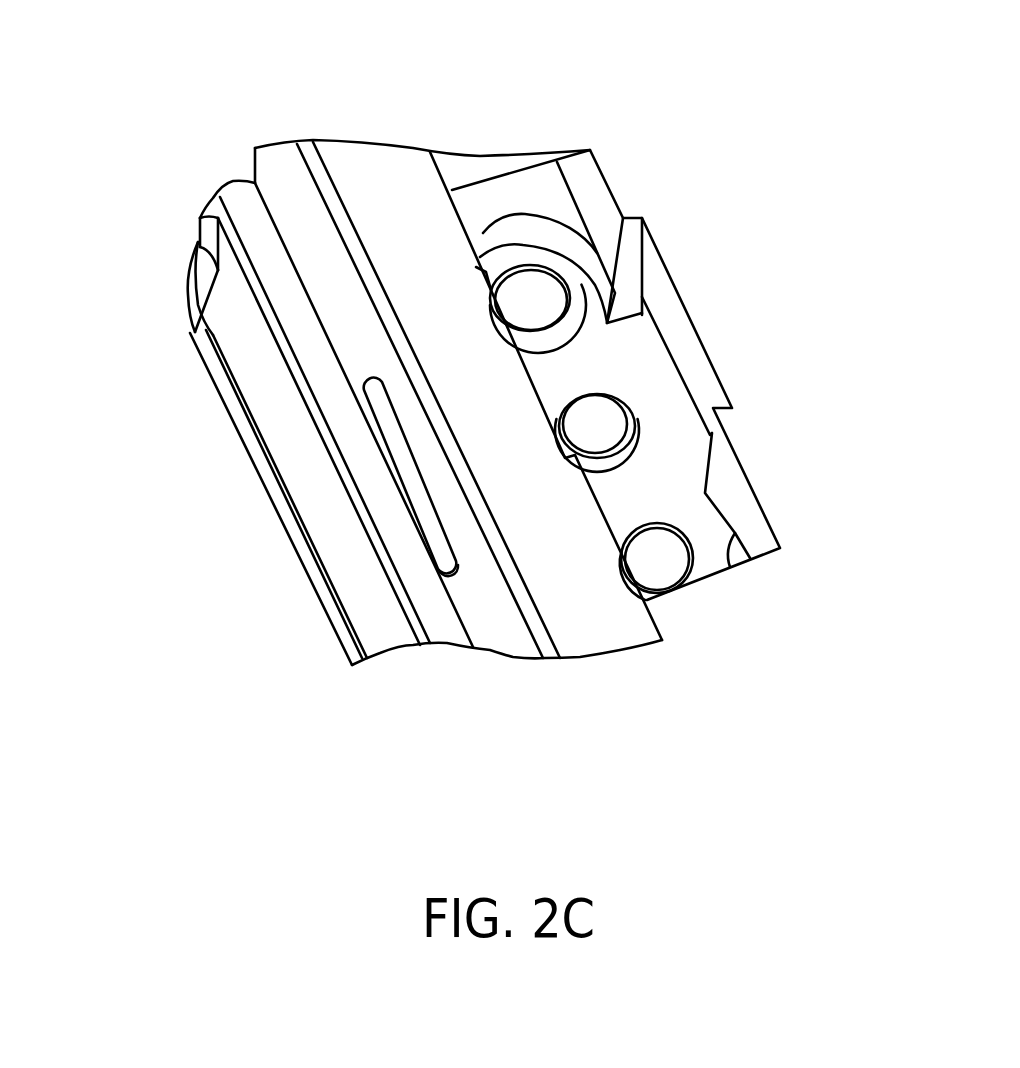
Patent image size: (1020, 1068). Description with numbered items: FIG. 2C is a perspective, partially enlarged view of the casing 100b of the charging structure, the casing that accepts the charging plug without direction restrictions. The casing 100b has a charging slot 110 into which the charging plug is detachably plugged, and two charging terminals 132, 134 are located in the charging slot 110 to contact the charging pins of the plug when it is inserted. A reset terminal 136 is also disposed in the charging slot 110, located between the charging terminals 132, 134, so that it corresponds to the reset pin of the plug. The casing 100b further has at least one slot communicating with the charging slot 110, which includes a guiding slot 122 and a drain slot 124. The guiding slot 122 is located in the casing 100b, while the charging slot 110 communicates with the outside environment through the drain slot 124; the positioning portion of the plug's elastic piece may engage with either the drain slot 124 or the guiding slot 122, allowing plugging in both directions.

The casing 100b is at (847, 866).
The charging slot 110 is at (477, 158).
The guiding slot 122 is at (646, 313).
The drain slot 124 is at (374, 385).
The charging terminal 132 is at (533, 293).
The charging terminal 134 is at (652, 553).
The reset terminal 136 is at (603, 415).